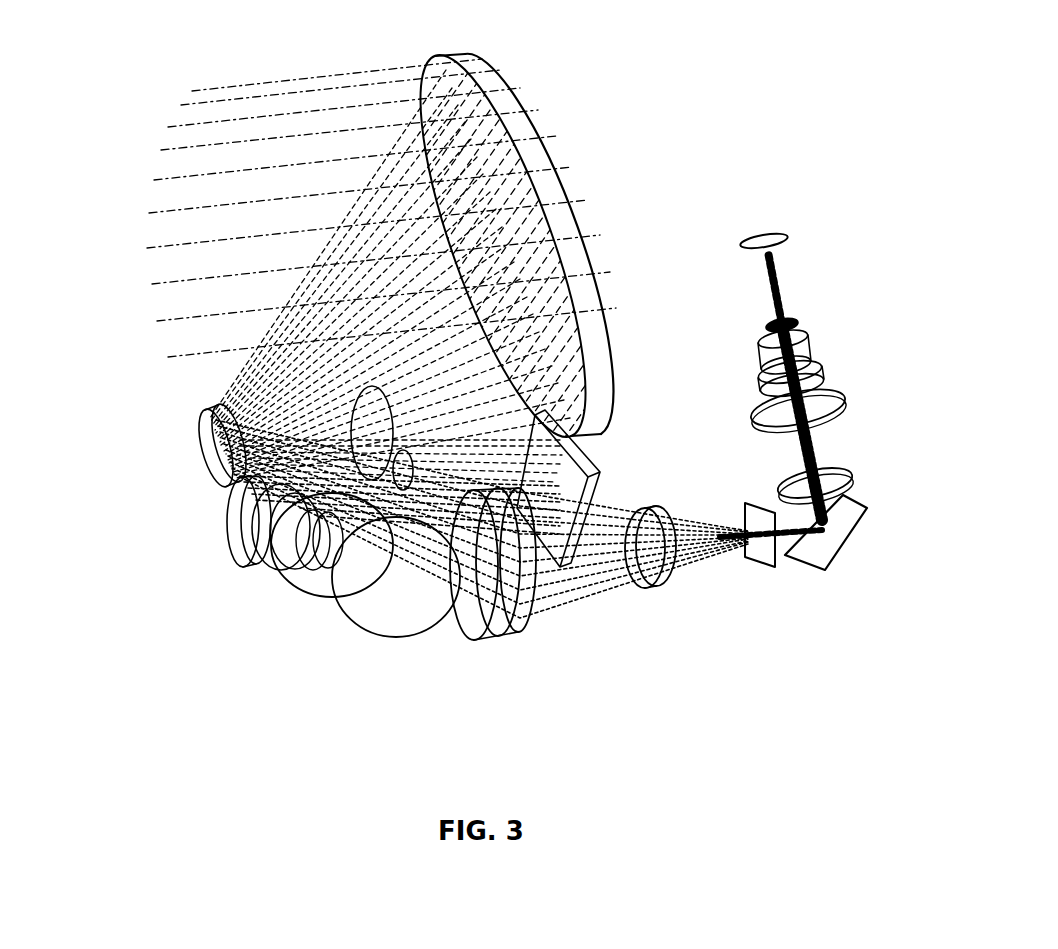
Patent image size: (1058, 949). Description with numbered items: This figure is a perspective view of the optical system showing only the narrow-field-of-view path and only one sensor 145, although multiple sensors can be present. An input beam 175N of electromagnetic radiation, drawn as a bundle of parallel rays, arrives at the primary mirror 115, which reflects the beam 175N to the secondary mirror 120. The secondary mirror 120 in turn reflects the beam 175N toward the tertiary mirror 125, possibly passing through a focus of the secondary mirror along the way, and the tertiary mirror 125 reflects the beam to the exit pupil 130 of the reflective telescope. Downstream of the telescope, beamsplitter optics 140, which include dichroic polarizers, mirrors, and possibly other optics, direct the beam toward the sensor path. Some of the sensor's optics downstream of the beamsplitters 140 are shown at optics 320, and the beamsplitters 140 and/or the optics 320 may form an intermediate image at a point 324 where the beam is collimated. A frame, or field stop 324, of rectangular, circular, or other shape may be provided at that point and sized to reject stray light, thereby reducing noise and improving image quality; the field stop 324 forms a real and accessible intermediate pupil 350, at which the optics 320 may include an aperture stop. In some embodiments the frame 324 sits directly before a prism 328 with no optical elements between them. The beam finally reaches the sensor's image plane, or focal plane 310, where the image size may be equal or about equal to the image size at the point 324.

The primary mirror 115 is at (519, 114).
The input beam 175N is at (162, 57).
The secondary mirror 120 is at (207, 459).
The exit pupil 130 is at (238, 527).
The beamsplitter optics 140 is at (547, 631).
The tertiary mirror 125 is at (597, 470).
The frame (field stop) at intermediate image point 324 is at (755, 518).
The prism 328 is at (838, 552).
The sensor optics 320 is at (743, 585).
The intermediate pupil 350 is at (764, 321).
The image plane (focal plane) 310 is at (767, 238).
The sensor 145 is at (729, 252).